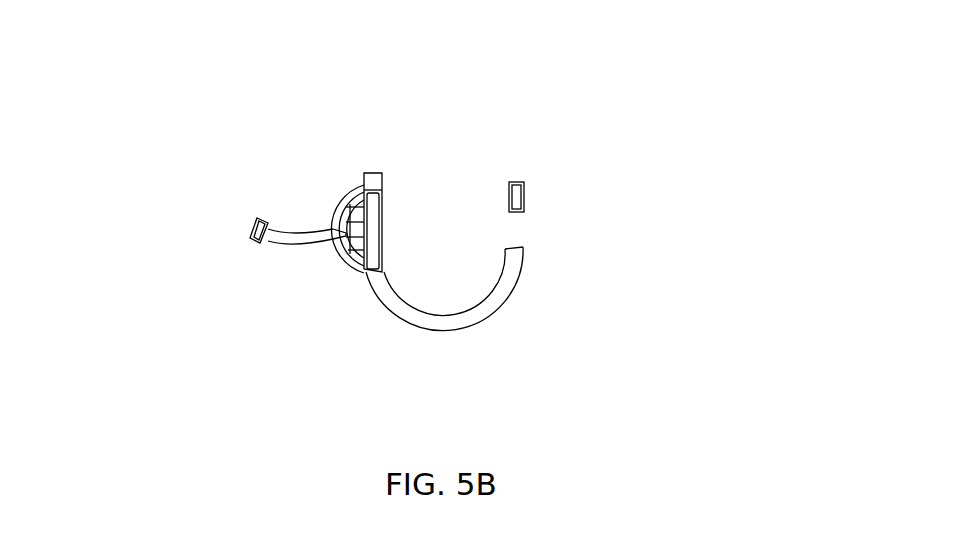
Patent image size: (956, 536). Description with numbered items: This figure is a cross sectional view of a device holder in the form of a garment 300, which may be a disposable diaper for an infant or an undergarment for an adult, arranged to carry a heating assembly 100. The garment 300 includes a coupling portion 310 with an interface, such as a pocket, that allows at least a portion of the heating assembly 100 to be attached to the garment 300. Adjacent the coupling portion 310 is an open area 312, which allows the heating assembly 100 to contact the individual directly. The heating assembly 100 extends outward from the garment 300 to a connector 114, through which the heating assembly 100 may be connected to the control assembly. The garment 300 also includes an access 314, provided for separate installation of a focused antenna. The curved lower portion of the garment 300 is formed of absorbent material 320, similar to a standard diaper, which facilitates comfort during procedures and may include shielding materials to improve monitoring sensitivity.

The garment 300 is at (505, 107).
The coupling portion 310 is at (327, 209).
The open area 312 is at (407, 206).
The access 314 is at (517, 229).
The absorbent material 320 is at (455, 328).
The heating assembly 100 is at (327, 246).
The connector 114 is at (250, 229).